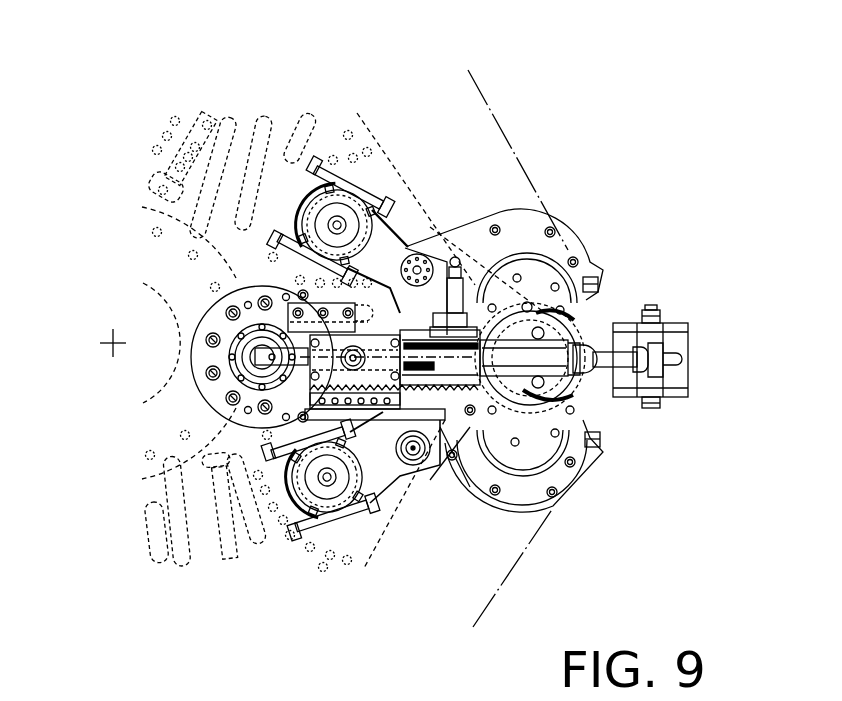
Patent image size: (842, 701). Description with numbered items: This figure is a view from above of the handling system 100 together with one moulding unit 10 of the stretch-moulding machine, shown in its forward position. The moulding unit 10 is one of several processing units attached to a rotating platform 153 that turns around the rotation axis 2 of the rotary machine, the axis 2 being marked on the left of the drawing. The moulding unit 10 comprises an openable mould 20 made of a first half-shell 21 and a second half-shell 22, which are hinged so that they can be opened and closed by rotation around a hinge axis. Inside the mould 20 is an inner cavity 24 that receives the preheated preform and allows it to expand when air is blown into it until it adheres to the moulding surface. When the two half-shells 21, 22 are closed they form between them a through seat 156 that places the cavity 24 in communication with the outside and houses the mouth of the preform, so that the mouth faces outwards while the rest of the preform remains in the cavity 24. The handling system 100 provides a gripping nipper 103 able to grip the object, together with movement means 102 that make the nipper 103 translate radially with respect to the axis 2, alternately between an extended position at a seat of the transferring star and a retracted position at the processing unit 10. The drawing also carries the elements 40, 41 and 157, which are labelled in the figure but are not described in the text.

The rotation axis 2 is at (113, 343).
The moulding unit 10 is at (656, 195).
The mould 20 is at (581, 373).
The first half-shell 21 is at (555, 507).
The second half-shell 22 is at (556, 208).
The inner cavity 24 is at (580, 305).
The lower guide roller 40 is at (400, 460).
The upper guide roller 41 is at (400, 235).
The handling system 100 is at (617, 305).
The movement means 102 is at (324, 418).
The gripping nipper 103 is at (520, 387).
The rotating platform 153 is at (304, 132).
The through seat 156 is at (478, 386).
The center line 157 is at (530, 145).